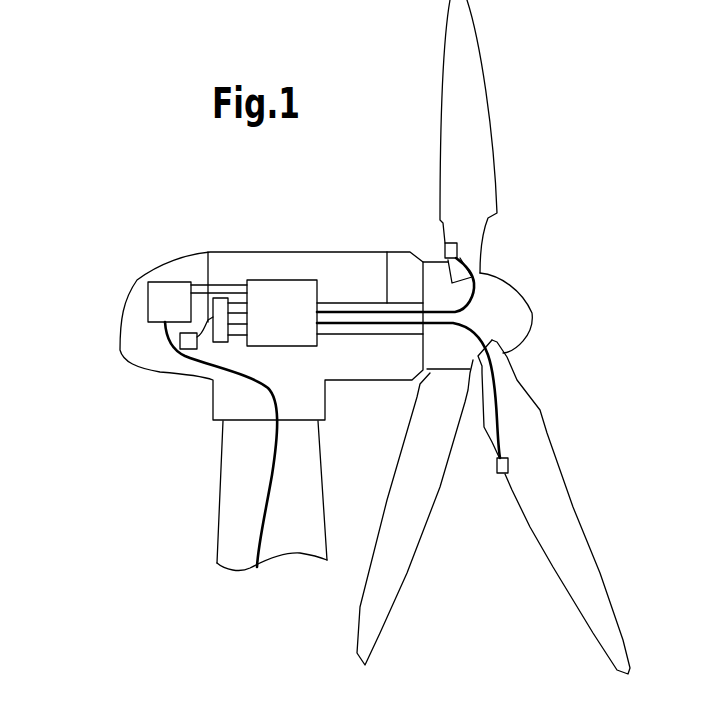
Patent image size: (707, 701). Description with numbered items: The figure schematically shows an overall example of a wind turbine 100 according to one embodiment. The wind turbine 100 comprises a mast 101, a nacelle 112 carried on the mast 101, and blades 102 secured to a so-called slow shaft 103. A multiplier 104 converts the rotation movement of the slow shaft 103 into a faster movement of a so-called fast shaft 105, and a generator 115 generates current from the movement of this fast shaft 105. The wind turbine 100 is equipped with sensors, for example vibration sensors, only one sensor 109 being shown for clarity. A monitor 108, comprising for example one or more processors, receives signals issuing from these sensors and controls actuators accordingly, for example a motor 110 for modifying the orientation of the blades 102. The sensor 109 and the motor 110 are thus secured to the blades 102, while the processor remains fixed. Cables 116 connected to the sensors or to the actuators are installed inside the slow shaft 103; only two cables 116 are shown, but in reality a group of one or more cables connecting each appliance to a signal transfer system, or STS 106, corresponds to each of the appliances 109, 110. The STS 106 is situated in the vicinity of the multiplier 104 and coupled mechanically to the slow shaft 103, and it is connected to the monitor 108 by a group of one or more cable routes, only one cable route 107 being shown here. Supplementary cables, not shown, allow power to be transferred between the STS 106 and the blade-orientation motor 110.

The wind turbine 100 is at (114, 194).
The mast 101 is at (220, 503).
The blades 102 is at (562, 568).
The slow shaft 103 is at (387, 260).
The multiplier 104 is at (303, 324).
The fast shaft 105 is at (208, 253).
The signal transfer system 106 is at (222, 342).
The cable route 107 is at (202, 333).
The monitor 108 is at (180, 340).
The sensor 109 is at (497, 465).
The motor 110 is at (435, 250).
The nacelle 112 is at (120, 342).
The generator 115 is at (148, 303).
The cables 116 is at (355, 324).